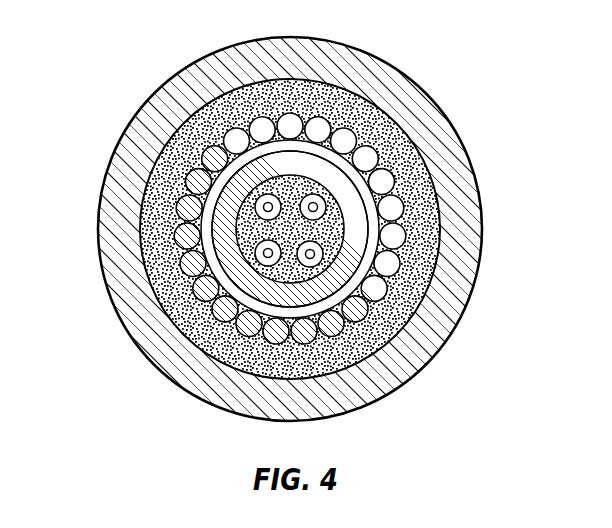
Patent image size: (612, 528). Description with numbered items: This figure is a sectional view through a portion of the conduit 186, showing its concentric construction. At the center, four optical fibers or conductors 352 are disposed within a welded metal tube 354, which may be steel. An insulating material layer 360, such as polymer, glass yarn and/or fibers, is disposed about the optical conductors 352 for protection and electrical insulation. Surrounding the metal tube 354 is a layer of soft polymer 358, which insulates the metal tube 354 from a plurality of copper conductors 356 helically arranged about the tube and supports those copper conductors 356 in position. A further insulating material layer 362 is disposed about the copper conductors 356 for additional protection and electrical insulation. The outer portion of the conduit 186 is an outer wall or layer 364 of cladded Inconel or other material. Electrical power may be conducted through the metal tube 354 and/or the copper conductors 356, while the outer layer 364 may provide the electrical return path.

The conduit 186 is at (122, 40).
The outer layer 364 is at (152, 118).
The insulating material layer 362 is at (141, 213).
The copper conductors 356 is at (397, 235).
The layer of soft polymer 358 is at (330, 157).
The metal tube 354 is at (222, 259).
The insulating material layer 360 is at (287, 285).
The optical conductors 352 is at (320, 258).